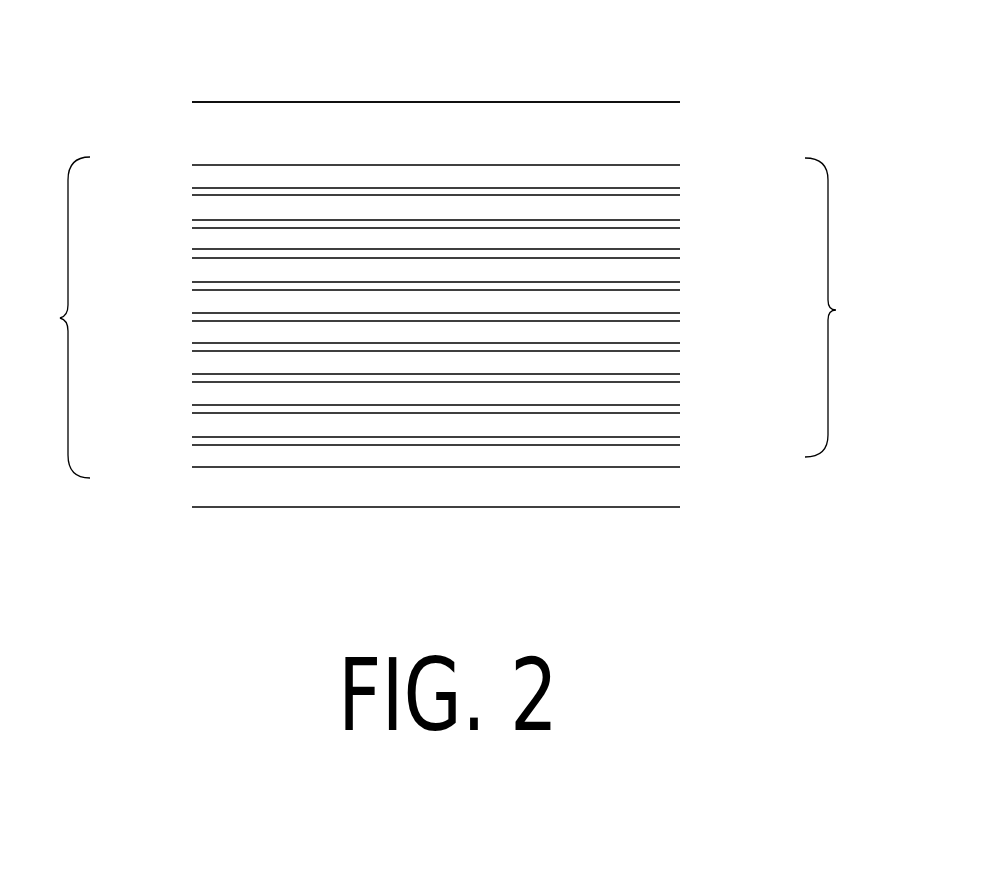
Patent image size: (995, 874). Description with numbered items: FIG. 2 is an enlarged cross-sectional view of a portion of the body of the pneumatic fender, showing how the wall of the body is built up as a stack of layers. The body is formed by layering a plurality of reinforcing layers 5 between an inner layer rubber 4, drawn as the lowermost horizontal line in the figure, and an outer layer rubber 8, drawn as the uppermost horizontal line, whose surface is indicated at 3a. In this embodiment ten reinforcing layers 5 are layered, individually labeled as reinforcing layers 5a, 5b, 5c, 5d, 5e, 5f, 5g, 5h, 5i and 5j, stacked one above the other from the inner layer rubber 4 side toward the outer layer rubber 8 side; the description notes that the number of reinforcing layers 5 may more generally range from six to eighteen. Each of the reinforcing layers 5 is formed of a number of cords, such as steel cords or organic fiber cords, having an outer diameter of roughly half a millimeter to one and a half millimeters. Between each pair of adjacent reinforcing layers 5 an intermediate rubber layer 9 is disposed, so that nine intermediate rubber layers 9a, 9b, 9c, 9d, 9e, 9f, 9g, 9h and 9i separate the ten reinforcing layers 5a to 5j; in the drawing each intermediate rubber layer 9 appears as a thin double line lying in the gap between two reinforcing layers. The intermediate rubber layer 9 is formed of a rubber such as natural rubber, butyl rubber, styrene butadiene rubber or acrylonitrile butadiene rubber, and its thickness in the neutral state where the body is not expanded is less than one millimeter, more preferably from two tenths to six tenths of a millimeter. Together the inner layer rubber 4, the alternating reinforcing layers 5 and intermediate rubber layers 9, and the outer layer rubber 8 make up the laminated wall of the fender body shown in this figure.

The inner surface of housing 3a is at (508, 103).
The inner layer rubber 4 is at (355, 496).
The reinforcing layers 5 is at (59, 317).
The reinforcing layer 5a is at (225, 456).
The reinforcing layer 5b is at (225, 425).
The reinforcing layer 5c is at (225, 393).
The reinforcing layer 5d is at (225, 361).
The reinforcing layer 5e is at (225, 331).
The reinforcing layer 5f is at (225, 301).
The reinforcing layer 5g is at (225, 270).
The reinforcing layer 5h is at (225, 236).
The reinforcing layer 5i is at (225, 204).
The reinforcing layer 5j is at (225, 175).
The outer layer rubber 8 is at (374, 118).
The intermediate rubber layer 9 is at (838, 310).
The intermediate rubber layer 9a is at (680, 441).
The intermediate rubber layer 9b is at (680, 409).
The intermediate rubber layer 9c is at (680, 378).
The intermediate rubber layer 9d is at (680, 347).
The intermediate rubber layer 9e is at (680, 317).
The intermediate rubber layer 9f is at (680, 286).
The intermediate rubber layer 9g is at (680, 253).
The intermediate rubber layer 9h is at (680, 224).
The intermediate rubber layer 9i is at (680, 191).